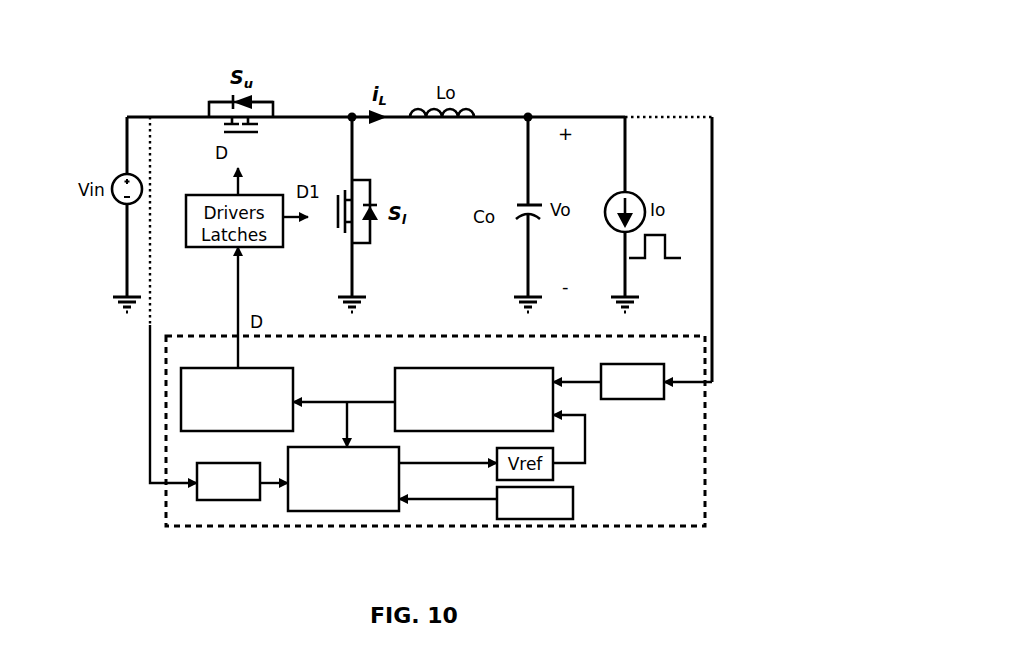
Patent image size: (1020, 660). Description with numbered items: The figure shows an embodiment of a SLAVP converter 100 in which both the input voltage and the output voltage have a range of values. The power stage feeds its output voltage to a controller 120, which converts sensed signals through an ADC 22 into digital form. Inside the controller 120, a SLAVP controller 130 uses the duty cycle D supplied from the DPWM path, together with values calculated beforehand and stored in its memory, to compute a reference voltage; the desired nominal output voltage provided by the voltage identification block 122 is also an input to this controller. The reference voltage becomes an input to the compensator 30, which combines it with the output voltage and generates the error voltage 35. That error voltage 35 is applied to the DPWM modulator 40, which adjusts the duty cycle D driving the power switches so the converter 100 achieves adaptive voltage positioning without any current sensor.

The SLAVP converter 100 is at (330, 84).
The analog-to-digital converter (ADC) 22 is at (613, 400).
The compensator 30 is at (480, 368).
The error voltage 35 is at (336, 370).
The DPWM modulator 40 is at (181, 392).
The controller 120 is at (705, 437).
The Vo-VID output voltage identification block 122 is at (573, 503).
The SLAVP controller 130 is at (288, 507).